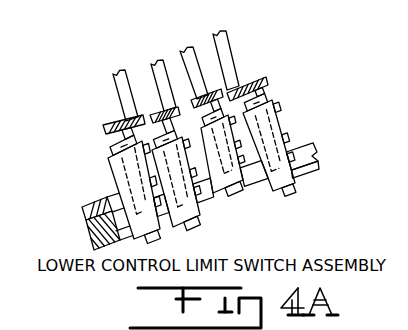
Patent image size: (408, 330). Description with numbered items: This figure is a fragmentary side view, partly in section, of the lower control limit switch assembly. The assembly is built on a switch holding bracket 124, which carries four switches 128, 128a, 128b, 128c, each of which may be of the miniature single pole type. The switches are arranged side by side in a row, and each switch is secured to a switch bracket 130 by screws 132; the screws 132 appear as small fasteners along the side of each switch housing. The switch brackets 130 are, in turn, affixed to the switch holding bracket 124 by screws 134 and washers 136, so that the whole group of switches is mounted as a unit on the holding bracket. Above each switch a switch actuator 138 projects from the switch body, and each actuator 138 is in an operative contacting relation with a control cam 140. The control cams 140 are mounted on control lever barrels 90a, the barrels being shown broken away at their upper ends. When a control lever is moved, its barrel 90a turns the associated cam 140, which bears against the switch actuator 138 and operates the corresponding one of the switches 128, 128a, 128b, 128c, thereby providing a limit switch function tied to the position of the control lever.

The control lever barrel 90a is at (231, 52).
The control cam 140 is at (267, 82).
The switch actuator 138 is at (268, 89).
The screw 132 is at (285, 110).
The switch 128 is at (275, 135).
The switch 128a is at (236, 180).
The switch 128b is at (196, 190).
The switch 128c is at (152, 210).
The switch bracket 130 is at (318, 158).
The switch holding bracket 124 is at (320, 172).
The washer 136 is at (292, 189).
The screw 134 is at (288, 198).